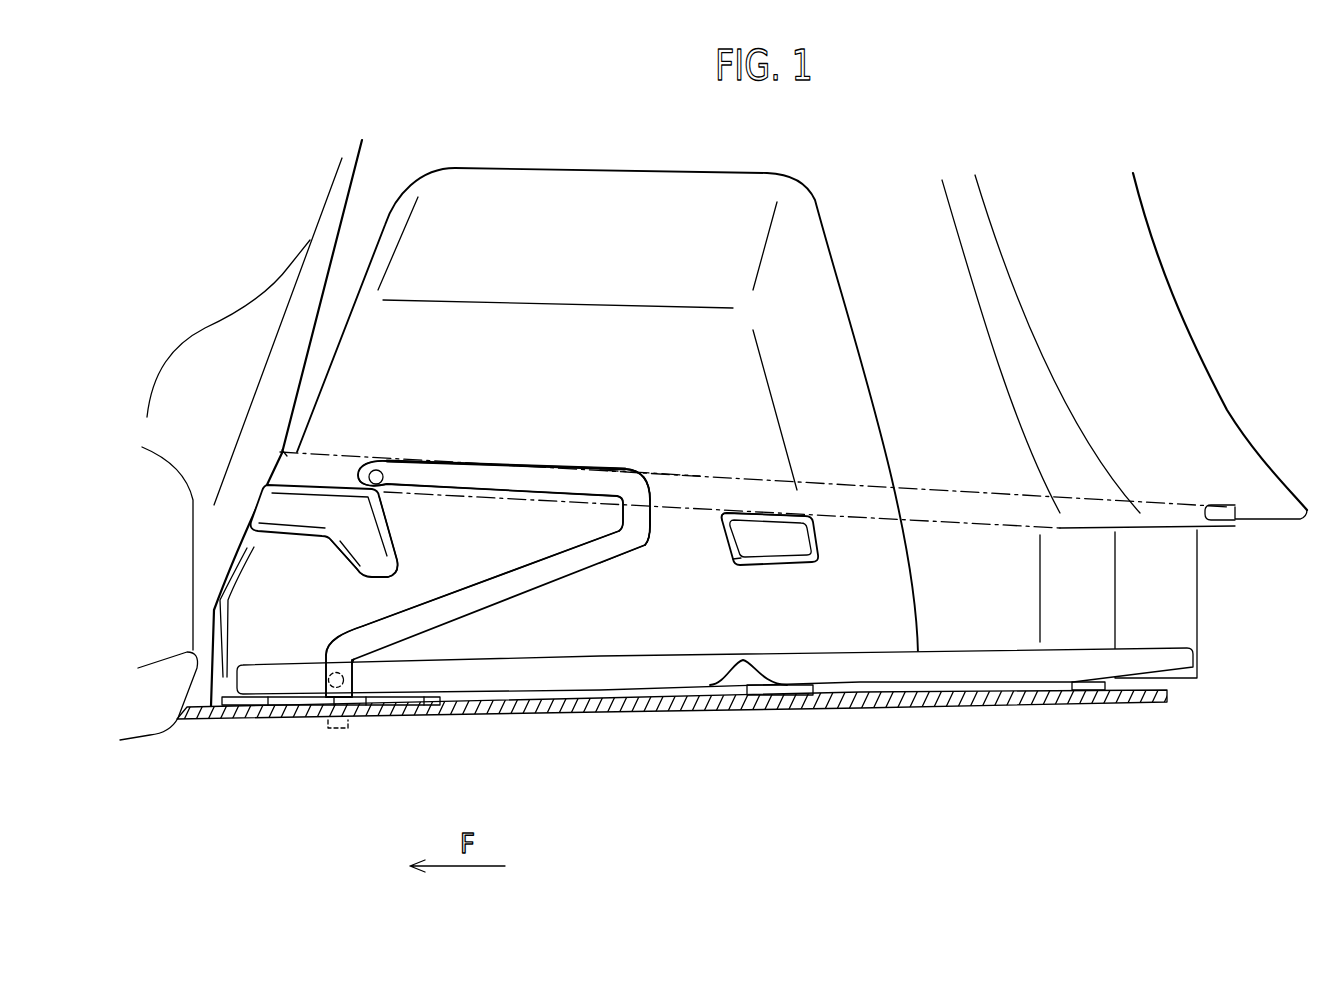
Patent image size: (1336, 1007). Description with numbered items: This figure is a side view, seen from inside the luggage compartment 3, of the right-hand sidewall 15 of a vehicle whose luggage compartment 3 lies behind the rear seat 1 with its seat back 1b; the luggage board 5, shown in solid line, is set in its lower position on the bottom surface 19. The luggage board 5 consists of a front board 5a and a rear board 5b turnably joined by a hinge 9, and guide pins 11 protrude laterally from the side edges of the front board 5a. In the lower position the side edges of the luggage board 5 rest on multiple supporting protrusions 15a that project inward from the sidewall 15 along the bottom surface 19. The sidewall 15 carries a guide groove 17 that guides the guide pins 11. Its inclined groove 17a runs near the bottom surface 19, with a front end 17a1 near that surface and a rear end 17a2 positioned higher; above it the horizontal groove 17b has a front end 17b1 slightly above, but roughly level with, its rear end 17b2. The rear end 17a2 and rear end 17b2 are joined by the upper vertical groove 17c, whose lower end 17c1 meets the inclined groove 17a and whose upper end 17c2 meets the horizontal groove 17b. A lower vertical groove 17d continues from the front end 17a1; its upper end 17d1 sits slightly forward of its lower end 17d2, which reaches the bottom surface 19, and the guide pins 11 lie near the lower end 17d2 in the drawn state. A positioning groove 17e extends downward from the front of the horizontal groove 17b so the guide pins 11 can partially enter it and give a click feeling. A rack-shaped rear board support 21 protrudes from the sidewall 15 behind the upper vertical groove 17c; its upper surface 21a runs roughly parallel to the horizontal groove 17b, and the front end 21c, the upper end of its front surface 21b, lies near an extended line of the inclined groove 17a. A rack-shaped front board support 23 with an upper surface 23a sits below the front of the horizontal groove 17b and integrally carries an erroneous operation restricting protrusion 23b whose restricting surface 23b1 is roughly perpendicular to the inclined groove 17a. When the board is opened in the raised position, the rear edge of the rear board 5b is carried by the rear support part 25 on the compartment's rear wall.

The rear seat 1 is at (215, 490).
The seat back 1b is at (290, 205).
The luggage compartment 3 is at (737, 371).
The luggage board 5 is at (967, 482).
The front board 5a is at (652, 471).
The rear board 5b is at (942, 487).
The hinge 9 is at (750, 656).
The guide pin 11 is at (372, 466).
The sidewall 15 is at (765, 620).
The supporting protrusion 15a is at (247, 706).
The guide groove 17 is at (443, 567).
The inclined groove 17a is at (513, 587).
The front end of inclined groove 17a1 is at (331, 648).
The rear end of inclined groove 17a2 is at (633, 548).
The horizontal groove 17b is at (573, 470).
The front end of horizontal groove 17b1 is at (390, 459).
The rear end of horizontal groove 17b2 is at (633, 466).
The upper vertical groove 17c is at (655, 512).
The lower end of upper vertical groove 17c1 is at (648, 553).
The upper end of upper vertical groove 17c2 is at (653, 480).
The lower vertical groove 17d is at (320, 668).
The upper end of lower vertical groove 17d1 is at (362, 650).
The lower end of lower vertical groove 17d2 is at (357, 715).
The positioning groove 17e is at (330, 538).
The bottom surface 19 is at (580, 708).
The rear board support 21 is at (759, 494).
The upper surface of rear board support 21a is at (745, 512).
The front surface of rear board support 21b is at (727, 540).
The front end of upper surface 21c is at (720, 519).
The front board support 23 is at (365, 475).
The upper surface of front board support 23a is at (287, 453).
The erroneous operation restricting protrusion 23b is at (397, 566).
The restricting surface 23b1 is at (397, 517).
The rear support part 25 is at (1208, 504).